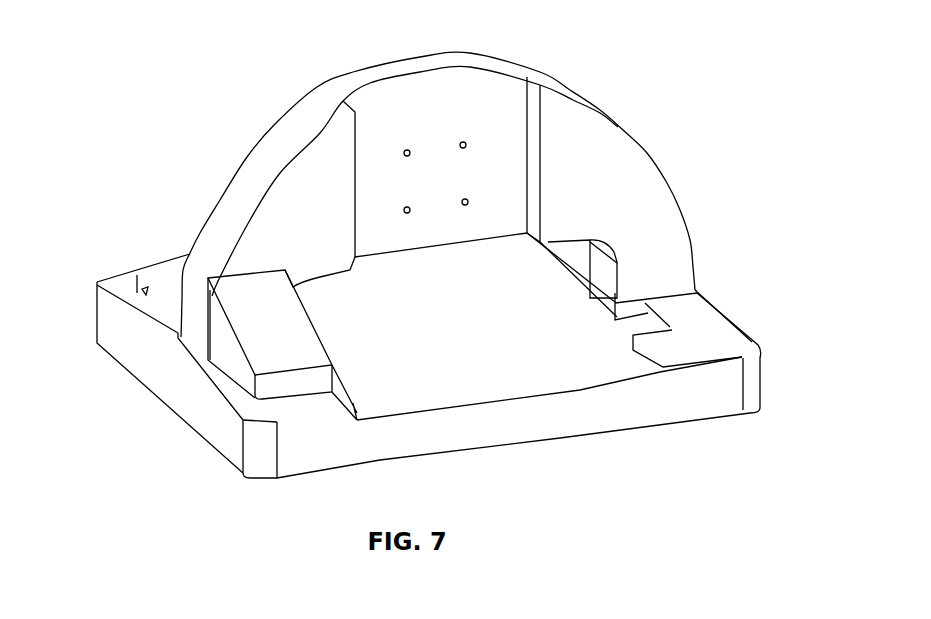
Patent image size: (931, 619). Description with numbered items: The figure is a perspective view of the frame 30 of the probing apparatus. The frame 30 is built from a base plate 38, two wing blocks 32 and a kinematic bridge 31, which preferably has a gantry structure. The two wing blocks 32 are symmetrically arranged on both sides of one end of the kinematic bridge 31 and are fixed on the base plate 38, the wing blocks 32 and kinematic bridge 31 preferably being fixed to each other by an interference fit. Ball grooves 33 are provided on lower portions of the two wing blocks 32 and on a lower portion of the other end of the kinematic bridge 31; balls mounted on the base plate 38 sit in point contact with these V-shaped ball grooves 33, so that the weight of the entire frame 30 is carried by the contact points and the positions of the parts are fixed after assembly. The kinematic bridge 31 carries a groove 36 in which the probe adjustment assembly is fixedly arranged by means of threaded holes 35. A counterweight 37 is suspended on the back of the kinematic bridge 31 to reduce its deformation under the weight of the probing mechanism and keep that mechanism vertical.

The frame 30 is at (647, 152).
The kinematic bridge 31 is at (658, 242).
The wing blocks 32 is at (260, 345).
The ball grooves 33 is at (150, 303).
The threaded holes 35 is at (400, 155).
The groove 36 is at (533, 123).
The counterweight 37 is at (420, 53).
The base plate 38 is at (725, 342).